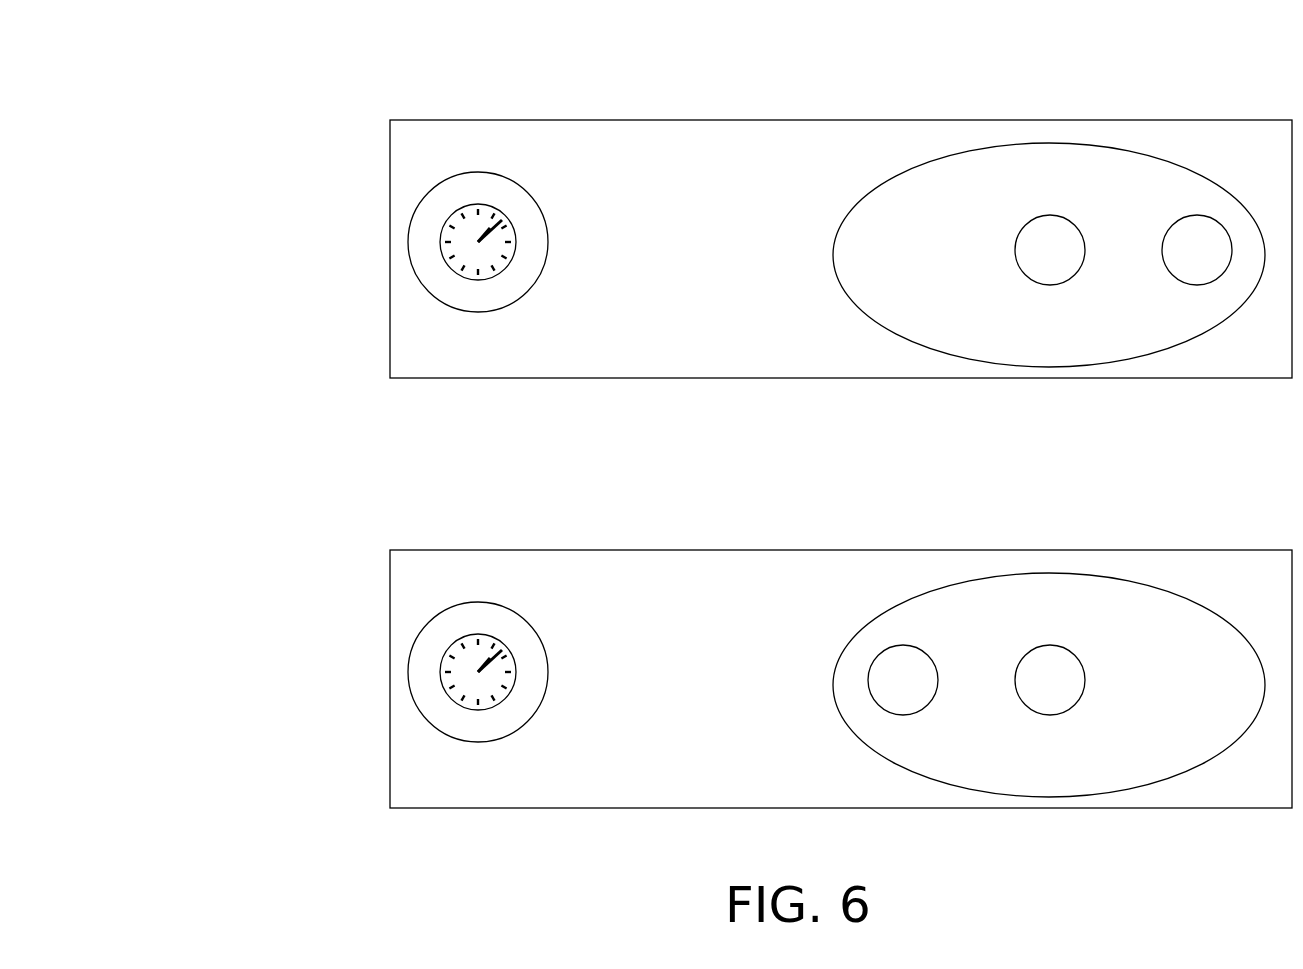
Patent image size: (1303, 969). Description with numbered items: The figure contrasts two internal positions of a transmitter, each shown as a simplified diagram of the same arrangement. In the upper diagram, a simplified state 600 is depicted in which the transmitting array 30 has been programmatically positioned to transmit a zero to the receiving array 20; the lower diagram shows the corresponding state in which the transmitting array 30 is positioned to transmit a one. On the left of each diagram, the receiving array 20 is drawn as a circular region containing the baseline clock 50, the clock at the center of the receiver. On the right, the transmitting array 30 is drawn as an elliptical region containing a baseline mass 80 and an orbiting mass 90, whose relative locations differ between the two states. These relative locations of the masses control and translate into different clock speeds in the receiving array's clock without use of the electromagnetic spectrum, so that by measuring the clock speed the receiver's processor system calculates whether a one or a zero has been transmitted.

The simplified state 600 is at (375, 256).
The receiving array 20 is at (414, 196).
The baseline clock 50 is at (478, 188).
The transmitting array 30 is at (838, 208).
The baseline mass 80 is at (1016, 223).
The orbiting mass 90 is at (1161, 224).